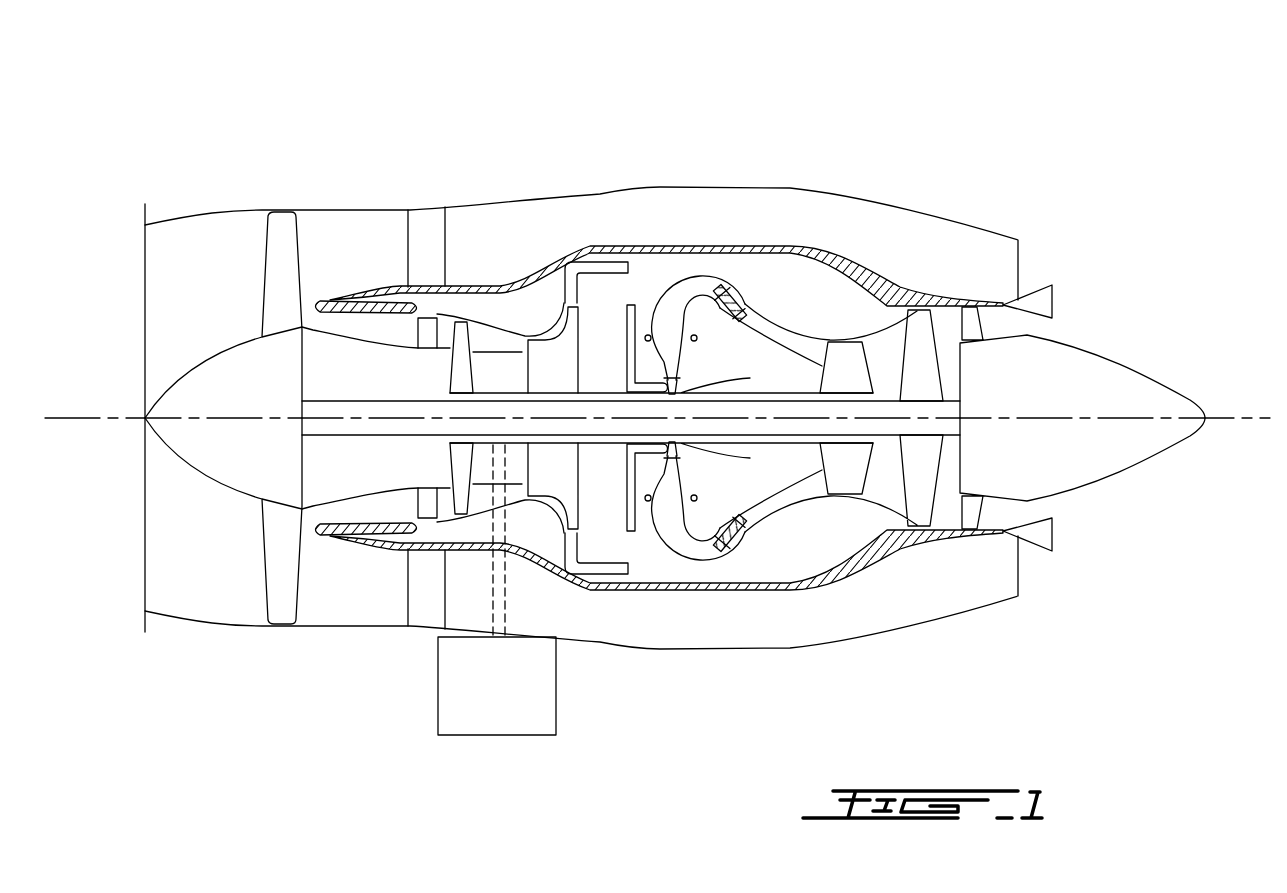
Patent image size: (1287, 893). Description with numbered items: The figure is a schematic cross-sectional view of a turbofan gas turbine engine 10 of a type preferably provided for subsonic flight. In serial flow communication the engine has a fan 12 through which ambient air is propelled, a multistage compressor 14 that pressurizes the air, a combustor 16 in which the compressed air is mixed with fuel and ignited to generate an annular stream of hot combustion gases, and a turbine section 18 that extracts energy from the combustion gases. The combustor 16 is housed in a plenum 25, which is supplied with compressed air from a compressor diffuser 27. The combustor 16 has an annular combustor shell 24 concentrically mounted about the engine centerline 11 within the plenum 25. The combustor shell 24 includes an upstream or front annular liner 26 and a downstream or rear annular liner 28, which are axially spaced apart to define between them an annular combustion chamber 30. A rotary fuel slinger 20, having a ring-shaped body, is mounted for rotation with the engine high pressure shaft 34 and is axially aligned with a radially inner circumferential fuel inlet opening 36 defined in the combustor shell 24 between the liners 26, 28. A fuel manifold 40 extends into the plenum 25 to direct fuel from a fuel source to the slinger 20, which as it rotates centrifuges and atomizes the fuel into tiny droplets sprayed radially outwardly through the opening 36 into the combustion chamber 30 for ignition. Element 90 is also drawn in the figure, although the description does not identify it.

The turbofan gas turbine engine 10 is at (1034, 150).
The engine centerline 11 is at (1246, 418).
The fan 12 is at (272, 551).
The multistage compressor 14 is at (493, 333).
The combustor 16 is at (697, 285).
The turbine section 18 is at (887, 466).
The rotary fuel slinger 20 is at (718, 418).
The combustor shell 24 is at (679, 559).
The plenum 25 is at (737, 264).
The front annular liner 26 is at (656, 308).
The compressor diffuser 27 is at (612, 267).
The rear annular liner 28 is at (690, 341).
The combustion chamber 30 is at (688, 347).
The high pressure shaft 34 is at (803, 396).
The fuel inlet opening 36 is at (668, 462).
The fuel manifold 40 is at (630, 320).
The sensor 90 is at (750, 532).